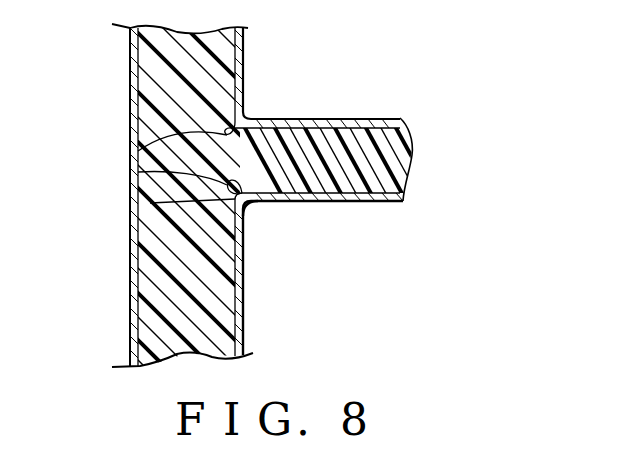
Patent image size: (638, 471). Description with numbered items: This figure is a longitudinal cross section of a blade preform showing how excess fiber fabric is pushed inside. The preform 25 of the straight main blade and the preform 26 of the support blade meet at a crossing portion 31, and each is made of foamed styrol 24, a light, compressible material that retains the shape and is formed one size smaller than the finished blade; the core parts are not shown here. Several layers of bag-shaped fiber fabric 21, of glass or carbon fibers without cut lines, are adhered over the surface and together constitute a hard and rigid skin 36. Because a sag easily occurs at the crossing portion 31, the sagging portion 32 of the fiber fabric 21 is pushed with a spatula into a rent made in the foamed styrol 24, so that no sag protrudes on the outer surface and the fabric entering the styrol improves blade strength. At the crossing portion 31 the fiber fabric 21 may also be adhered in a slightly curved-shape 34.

The fiber fabric 21 is at (320, 190).
The skin 36 is at (246, 58).
The foamed styrol 24 is at (243, 87).
The preform of the straight blade 25 is at (148, 86).
The preform of the support blade 26 is at (349, 132).
The crossing portion 31 is at (150, 203).
The sagging portion 32 is at (138, 151).
The curved-shape 34 is at (249, 204).